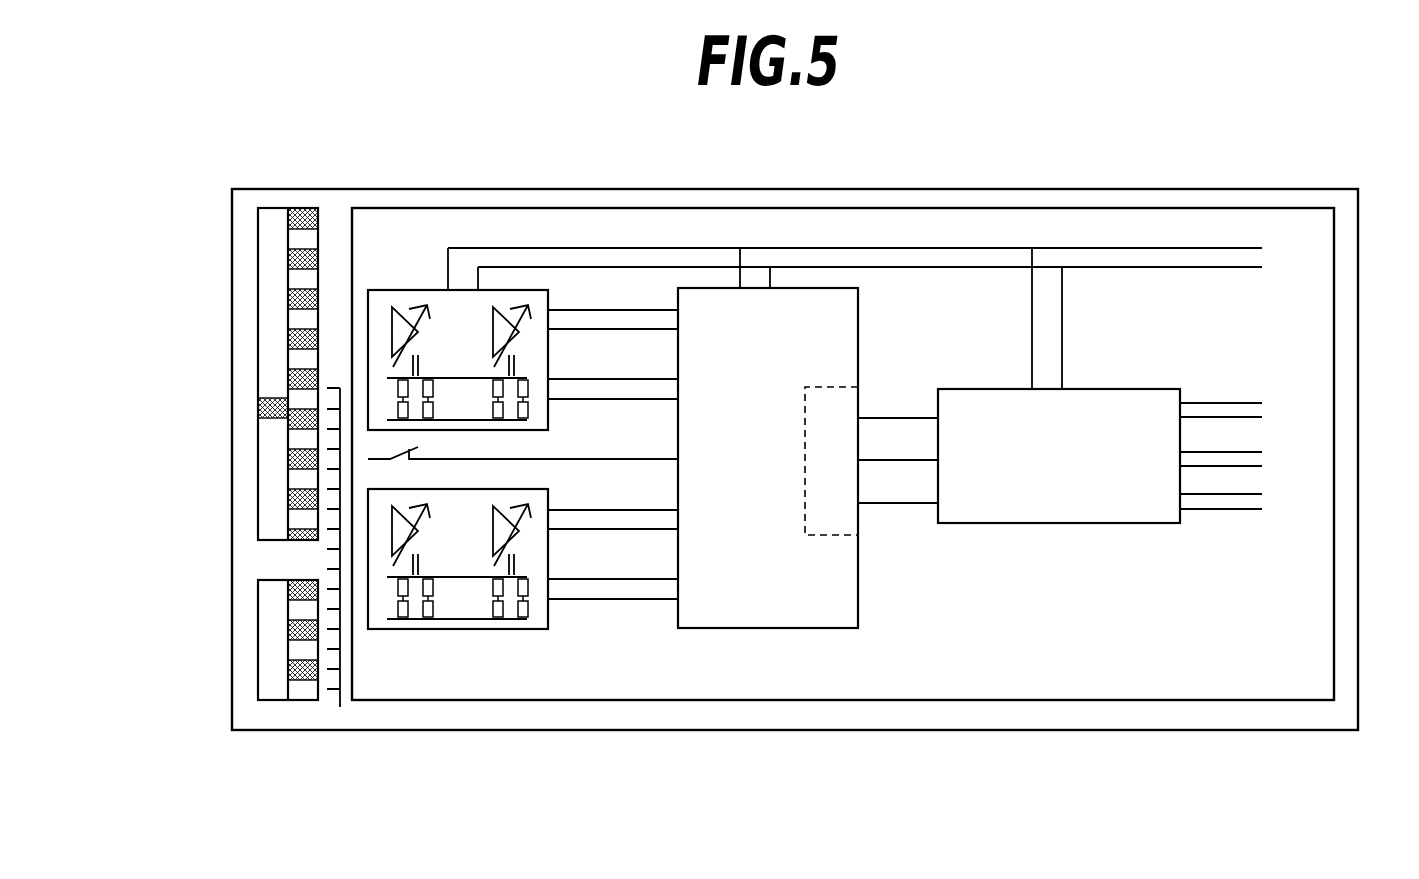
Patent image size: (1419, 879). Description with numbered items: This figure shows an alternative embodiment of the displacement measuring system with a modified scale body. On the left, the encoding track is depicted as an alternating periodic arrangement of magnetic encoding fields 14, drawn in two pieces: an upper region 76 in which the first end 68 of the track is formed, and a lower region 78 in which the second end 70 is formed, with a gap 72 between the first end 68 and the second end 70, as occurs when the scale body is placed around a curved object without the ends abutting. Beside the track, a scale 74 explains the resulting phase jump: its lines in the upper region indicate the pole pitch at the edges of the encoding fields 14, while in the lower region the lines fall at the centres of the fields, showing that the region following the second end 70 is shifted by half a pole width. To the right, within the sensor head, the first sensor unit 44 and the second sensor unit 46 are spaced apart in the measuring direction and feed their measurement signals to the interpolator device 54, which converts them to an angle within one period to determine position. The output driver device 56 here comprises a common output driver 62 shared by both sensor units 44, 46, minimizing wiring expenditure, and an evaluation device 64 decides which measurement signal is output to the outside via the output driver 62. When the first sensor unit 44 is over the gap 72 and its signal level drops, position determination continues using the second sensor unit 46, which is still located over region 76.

The encoding fields 14 is at (305, 687).
The first sensor unit 44 is at (380, 620).
The second sensor unit 46 is at (393, 298).
The interpolator device 54 is at (778, 597).
The output driver device 56 is at (1015, 585).
The common output driver 62 is at (1113, 492).
The evaluation device 64 is at (823, 387).
The first end 68 is at (303, 540).
The second end 70 is at (297, 574).
The gap 72 is at (298, 562).
The scale 74 is at (340, 707).
The region 76 is at (277, 312).
The region 78 is at (275, 653).